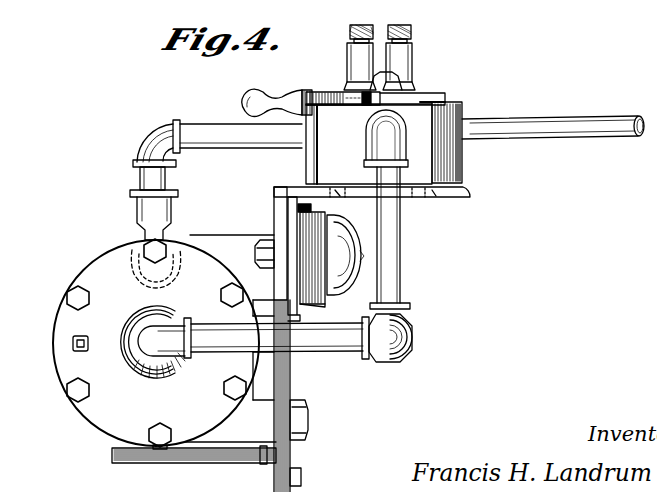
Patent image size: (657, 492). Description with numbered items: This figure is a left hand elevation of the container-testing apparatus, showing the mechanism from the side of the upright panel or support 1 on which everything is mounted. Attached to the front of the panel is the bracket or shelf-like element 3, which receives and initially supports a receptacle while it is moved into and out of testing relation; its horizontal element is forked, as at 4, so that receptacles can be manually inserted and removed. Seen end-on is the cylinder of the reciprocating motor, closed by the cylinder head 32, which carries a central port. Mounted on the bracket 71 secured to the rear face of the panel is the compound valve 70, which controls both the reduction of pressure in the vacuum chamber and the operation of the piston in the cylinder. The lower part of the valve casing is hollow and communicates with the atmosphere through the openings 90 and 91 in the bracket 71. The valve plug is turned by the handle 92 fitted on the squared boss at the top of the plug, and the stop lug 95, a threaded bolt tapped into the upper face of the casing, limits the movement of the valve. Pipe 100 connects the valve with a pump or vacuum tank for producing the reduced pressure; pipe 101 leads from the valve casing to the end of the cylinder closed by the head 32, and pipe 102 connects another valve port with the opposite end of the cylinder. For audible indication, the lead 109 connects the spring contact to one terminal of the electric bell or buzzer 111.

The panel or support 1 is at (291, 389).
The bracket or shelf-like element 3 is at (263, 462).
The forked horizontal element 4 is at (188, 462).
The cylinder head 32 is at (108, 416).
The compound valve 70 is at (455, 105).
The bracket 71 is at (418, 198).
The opening in bracket 90 is at (340, 197).
The opening in bracket 91 is at (436, 197).
The handle 92 is at (325, 84).
The stop lug 95 is at (364, 107).
The pipe 100 is at (572, 128).
The pipe 101 is at (401, 265).
The pipe 102 is at (258, 138).
The lead 109 is at (345, 352).
The electric bell or buzzer 111 is at (333, 297).